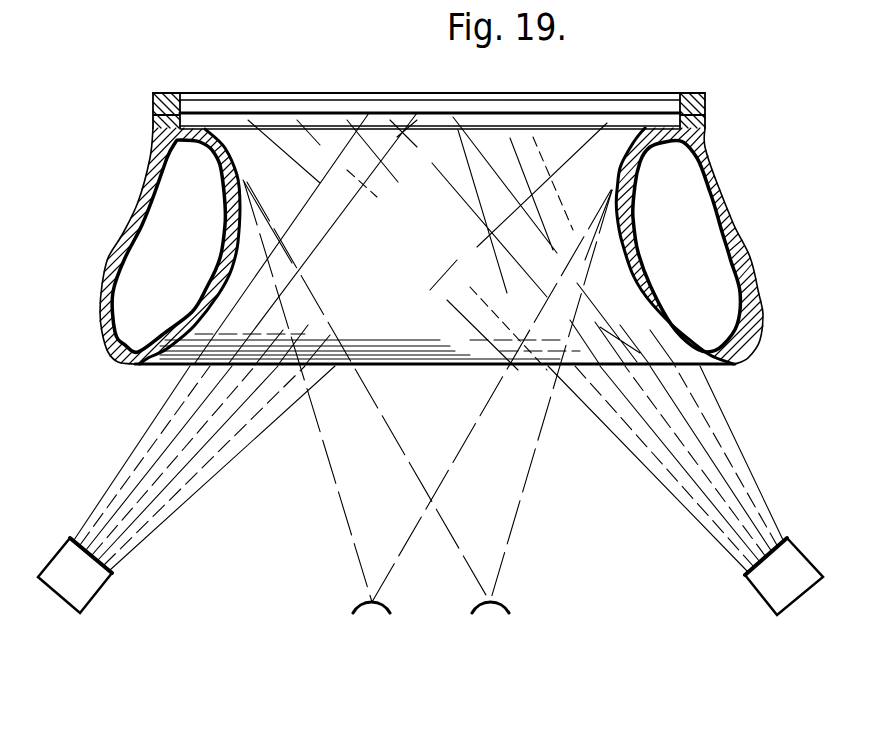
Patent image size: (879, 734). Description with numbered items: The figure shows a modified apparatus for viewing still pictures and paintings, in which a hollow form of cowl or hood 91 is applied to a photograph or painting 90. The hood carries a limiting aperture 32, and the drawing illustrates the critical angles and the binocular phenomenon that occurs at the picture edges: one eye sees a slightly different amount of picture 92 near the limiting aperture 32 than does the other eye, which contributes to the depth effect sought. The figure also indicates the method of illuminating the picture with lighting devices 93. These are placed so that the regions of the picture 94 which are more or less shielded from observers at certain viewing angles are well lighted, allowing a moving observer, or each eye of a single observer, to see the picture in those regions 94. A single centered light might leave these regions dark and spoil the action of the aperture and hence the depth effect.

The photograph or painting 90 is at (447, 115).
The cowl or hood 91 is at (720, 283).
The picture near the limiting aperture 92 is at (216, 113).
The lighting devices 93 is at (97, 583).
The regions of the picture 94 is at (187, 115).
The limiting aperture 32 is at (237, 164).